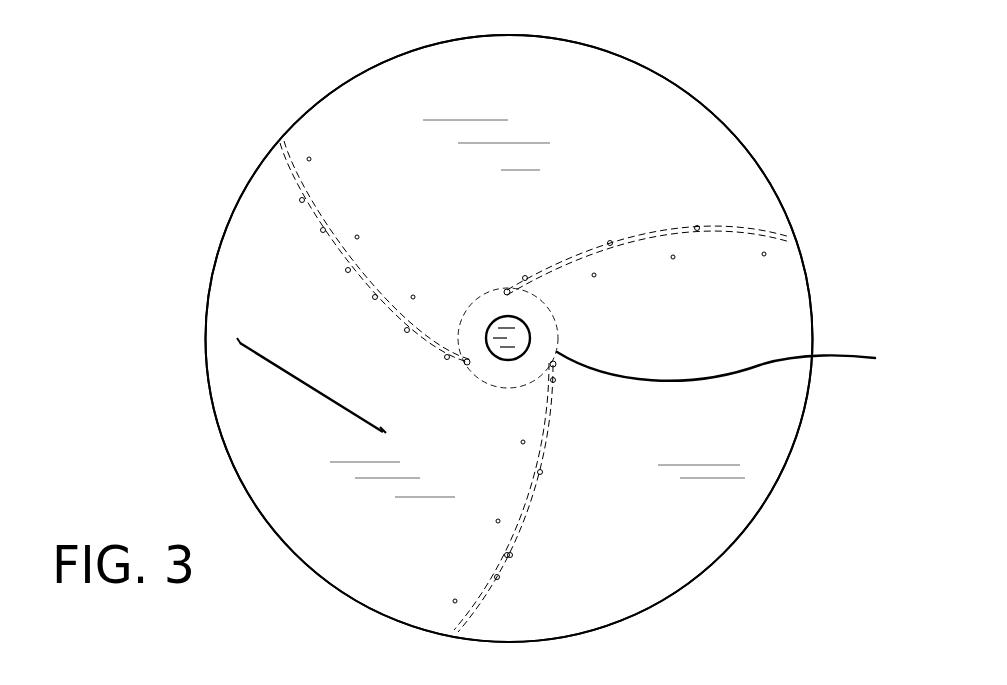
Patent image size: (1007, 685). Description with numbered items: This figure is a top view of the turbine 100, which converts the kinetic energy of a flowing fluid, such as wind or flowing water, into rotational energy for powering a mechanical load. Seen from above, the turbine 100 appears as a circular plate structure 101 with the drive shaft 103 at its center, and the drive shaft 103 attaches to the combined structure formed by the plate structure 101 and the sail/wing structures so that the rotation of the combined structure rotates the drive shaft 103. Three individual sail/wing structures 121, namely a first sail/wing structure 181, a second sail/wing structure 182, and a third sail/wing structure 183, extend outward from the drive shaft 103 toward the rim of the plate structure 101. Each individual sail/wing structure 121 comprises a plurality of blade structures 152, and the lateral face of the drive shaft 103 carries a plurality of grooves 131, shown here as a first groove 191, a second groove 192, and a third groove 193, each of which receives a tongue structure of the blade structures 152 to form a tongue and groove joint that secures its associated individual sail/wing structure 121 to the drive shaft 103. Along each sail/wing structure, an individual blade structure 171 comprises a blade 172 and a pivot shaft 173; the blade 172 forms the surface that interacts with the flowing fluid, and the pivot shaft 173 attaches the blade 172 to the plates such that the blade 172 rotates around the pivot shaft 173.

The turbine 100 is at (842, 157).
The plate structure 101 is at (797, 424).
The drive shaft 103 is at (746, 357).
The individual sail/wing structure 121 is at (111, 115).
The groove 131 is at (111, 328).
The blade structure 152 is at (310, 392).
The individual blade structure 171 is at (302, 200).
The blade 172 is at (497, 577).
The pivot shaft 173 is at (510, 555).
The first sail/wing structure 181 is at (645, 213).
The second sail/wing structure 182 is at (574, 452).
The third sail/wing structure 183 is at (383, 273).
The first groove 191 is at (507, 292).
The second groove 192 is at (552, 360).
The third groove 193 is at (467, 362).